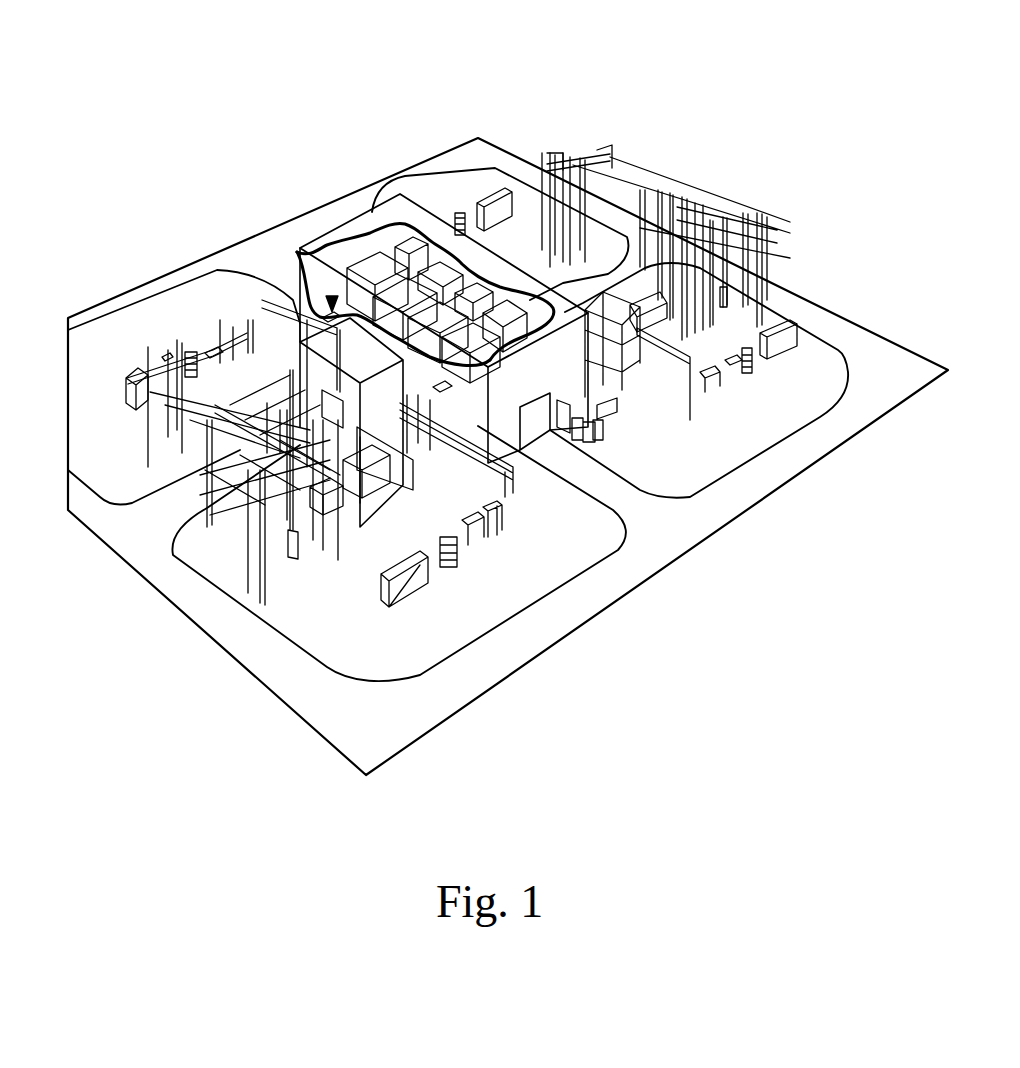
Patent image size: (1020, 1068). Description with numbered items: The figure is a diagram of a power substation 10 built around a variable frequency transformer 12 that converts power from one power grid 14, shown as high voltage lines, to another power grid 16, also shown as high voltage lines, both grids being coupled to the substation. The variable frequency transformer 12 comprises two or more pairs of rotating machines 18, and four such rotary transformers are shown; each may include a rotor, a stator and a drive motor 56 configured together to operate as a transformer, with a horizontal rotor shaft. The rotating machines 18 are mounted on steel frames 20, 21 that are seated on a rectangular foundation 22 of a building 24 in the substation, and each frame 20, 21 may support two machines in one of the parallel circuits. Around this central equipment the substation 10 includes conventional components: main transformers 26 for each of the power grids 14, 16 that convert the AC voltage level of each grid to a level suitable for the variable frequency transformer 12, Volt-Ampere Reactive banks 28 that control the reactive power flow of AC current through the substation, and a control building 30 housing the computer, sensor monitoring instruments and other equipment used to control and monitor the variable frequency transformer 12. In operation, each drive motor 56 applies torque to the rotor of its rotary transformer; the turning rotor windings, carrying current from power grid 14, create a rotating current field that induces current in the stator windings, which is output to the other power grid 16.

The power substation 10 is at (324, 42).
The variable frequency transformer 12 is at (440, 247).
The power grid 14 is at (300, 366).
The power grid 16 is at (575, 170).
The rotating machines 18 is at (440, 278).
The steel frame 20 is at (328, 262).
The steel frame 21 is at (640, 490).
The rectangular foundation 22 is at (330, 295).
The building 24 is at (372, 232).
The main transformers 26 is at (645, 342).
The Volt-Ampere Reactive (VAR) banks 28 is at (490, 196).
The control building 30 is at (362, 362).
The drive motor 56 is at (438, 246).